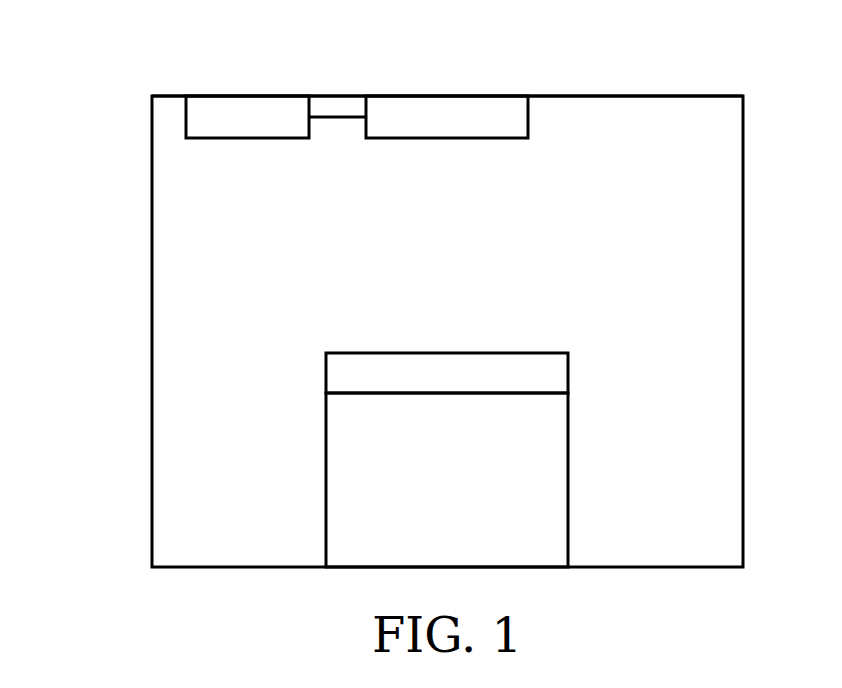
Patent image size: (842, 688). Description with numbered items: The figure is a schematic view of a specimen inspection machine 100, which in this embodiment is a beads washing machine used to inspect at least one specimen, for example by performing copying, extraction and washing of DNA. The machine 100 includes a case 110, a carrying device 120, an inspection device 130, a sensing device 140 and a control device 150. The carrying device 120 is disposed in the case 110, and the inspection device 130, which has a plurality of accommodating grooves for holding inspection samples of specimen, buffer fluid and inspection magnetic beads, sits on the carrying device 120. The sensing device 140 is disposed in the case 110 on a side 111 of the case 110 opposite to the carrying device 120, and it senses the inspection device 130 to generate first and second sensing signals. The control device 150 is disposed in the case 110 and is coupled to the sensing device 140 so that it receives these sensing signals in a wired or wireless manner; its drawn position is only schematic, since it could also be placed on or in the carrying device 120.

The specimen inspection machine 100 is at (97, 52).
The case 110 is at (678, 96).
The side of the case 111 is at (478, 95).
The carrying device 120 is at (557, 479).
The inspection device 130 is at (557, 373).
The sensing device 140 is at (418, 107).
The control device 150 is at (247, 107).